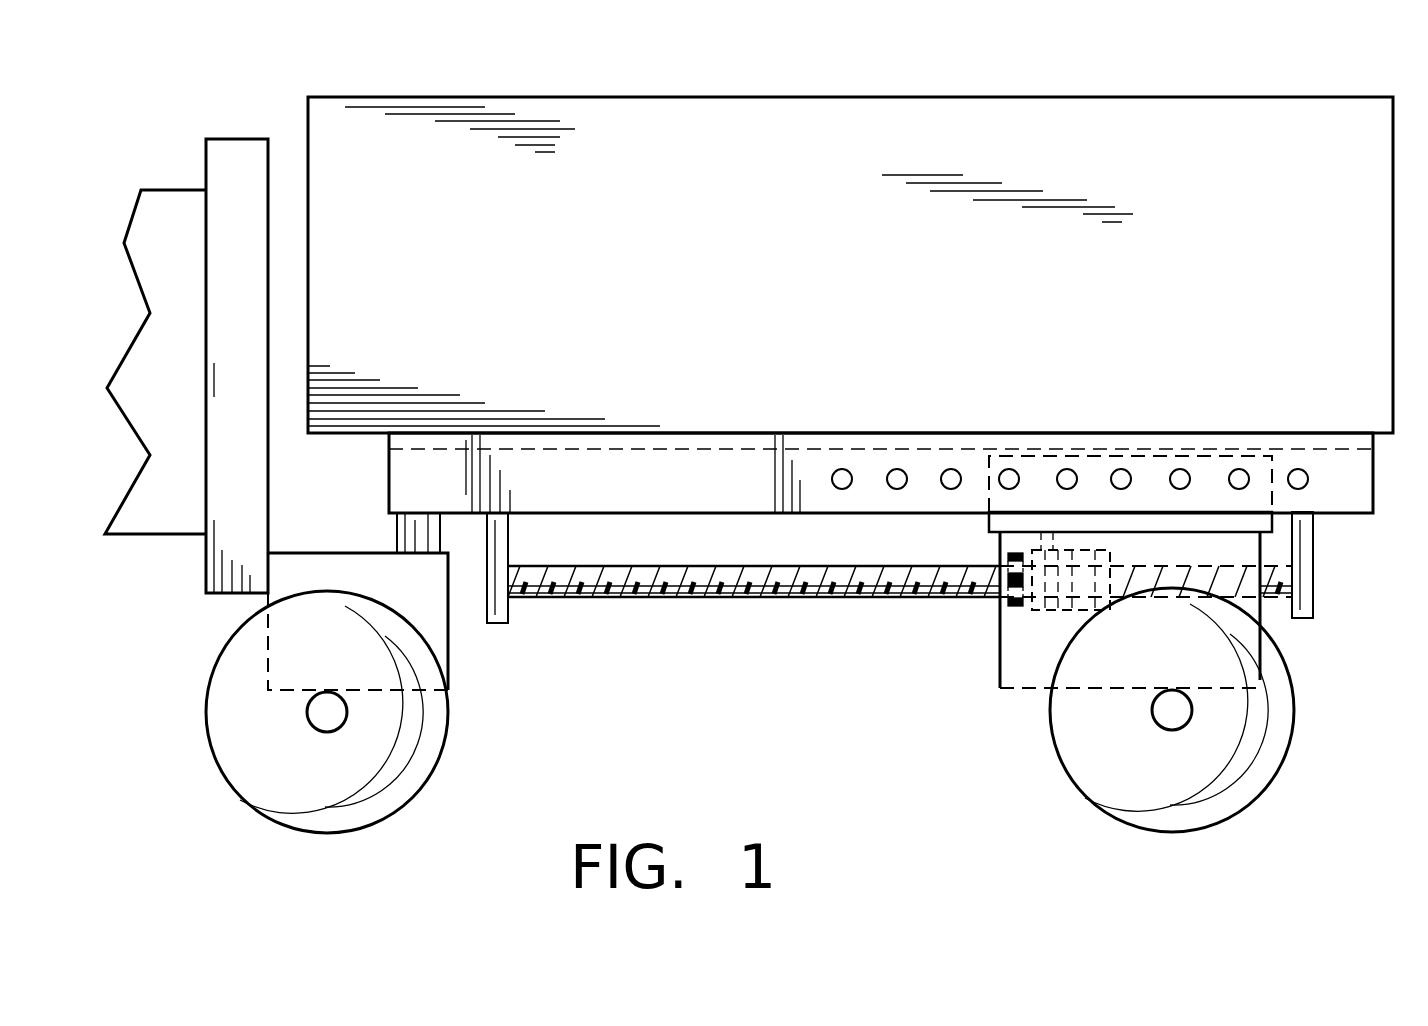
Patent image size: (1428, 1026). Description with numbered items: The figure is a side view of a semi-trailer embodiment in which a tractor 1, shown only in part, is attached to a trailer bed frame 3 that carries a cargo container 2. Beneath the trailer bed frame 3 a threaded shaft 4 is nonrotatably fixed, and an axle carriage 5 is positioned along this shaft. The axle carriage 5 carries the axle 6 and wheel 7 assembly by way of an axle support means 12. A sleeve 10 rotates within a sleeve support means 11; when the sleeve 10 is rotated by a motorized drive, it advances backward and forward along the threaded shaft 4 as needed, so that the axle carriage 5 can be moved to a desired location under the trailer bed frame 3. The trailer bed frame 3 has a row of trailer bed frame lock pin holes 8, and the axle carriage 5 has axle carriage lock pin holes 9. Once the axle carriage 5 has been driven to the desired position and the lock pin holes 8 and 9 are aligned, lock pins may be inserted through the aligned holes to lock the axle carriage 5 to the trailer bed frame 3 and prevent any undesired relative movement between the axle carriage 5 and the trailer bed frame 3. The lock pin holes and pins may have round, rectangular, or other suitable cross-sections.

The tractor 1 is at (173, 523).
The cargo container 2 is at (605, 143).
The trailer bed frame 3 is at (577, 488).
The threaded shaft 4 is at (701, 603).
The axle carriage 5 is at (1257, 493).
The axle 6 is at (1170, 712).
The wheel 7 is at (1250, 760).
The trailer bed frame lock pin holes 8 is at (852, 489).
The axle carriage lock pin holes 9 is at (1000, 487).
The sleeve 10 is at (1065, 530).
The sleeve support means 11 is at (1100, 545).
The axle support means 12 is at (1253, 608).